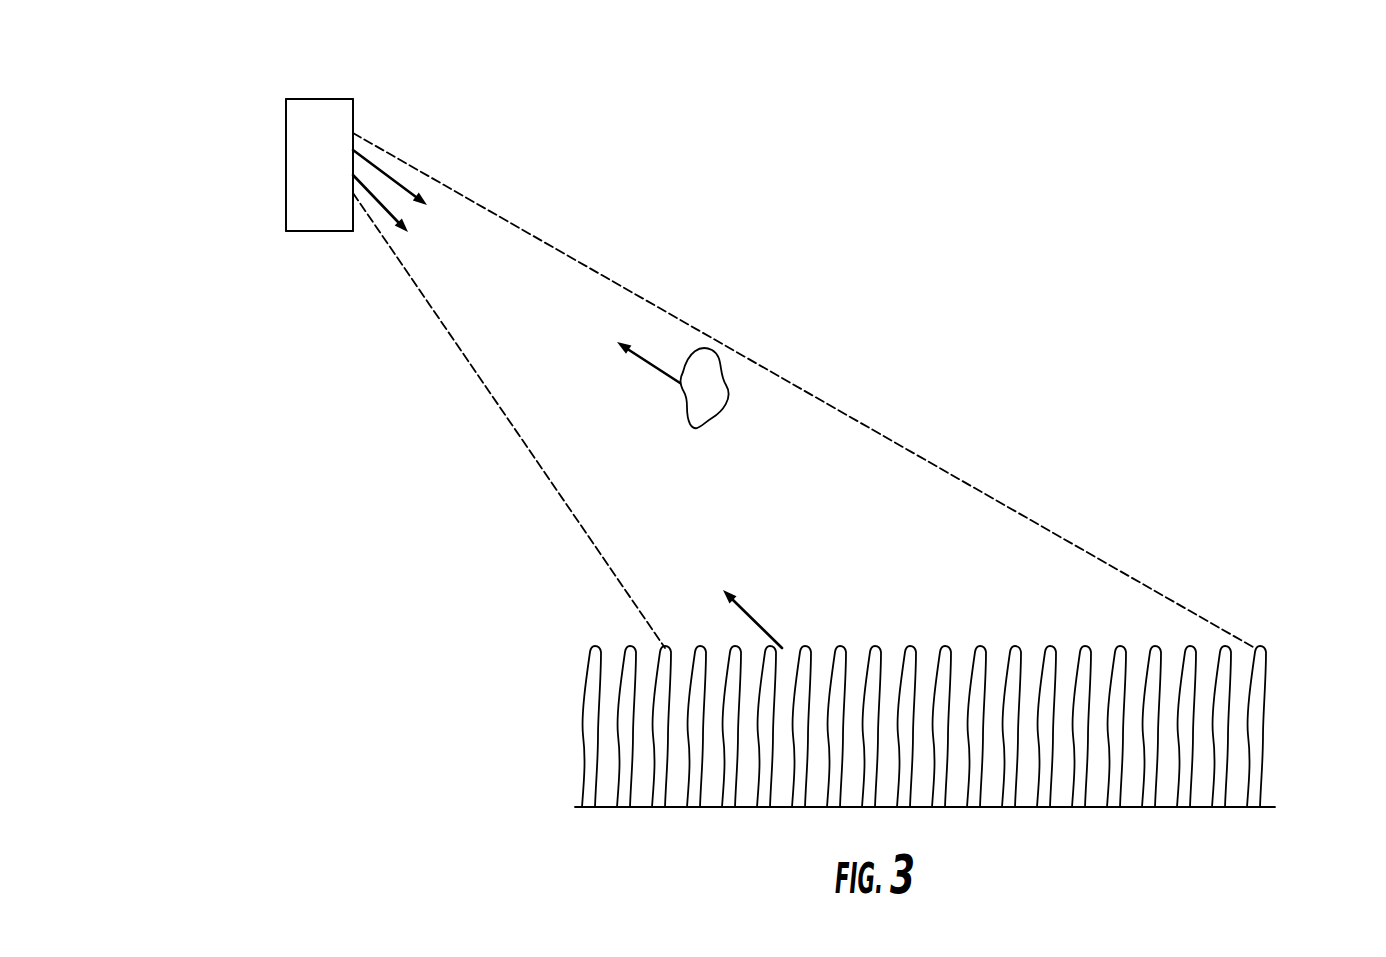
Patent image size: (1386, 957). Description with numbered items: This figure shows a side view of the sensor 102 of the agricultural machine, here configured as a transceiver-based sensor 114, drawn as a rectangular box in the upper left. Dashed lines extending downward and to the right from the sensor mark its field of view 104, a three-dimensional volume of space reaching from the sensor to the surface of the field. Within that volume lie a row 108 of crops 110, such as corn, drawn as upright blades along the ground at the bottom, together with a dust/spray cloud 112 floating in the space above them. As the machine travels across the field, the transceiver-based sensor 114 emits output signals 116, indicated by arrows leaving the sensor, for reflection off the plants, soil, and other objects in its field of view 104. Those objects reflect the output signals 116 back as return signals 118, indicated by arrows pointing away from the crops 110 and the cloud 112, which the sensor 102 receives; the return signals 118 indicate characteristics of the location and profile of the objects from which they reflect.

The sensor 102 is at (277, 64).
The field of view 104 is at (578, 524).
The rows of crops 108 is at (973, 684).
The crops 110 is at (943, 653).
The dust/spray cloud 112 is at (693, 430).
The transceiver-based sensor 114 is at (320, 231).
The output signals 116 is at (397, 178).
The return signals 118 is at (658, 377).